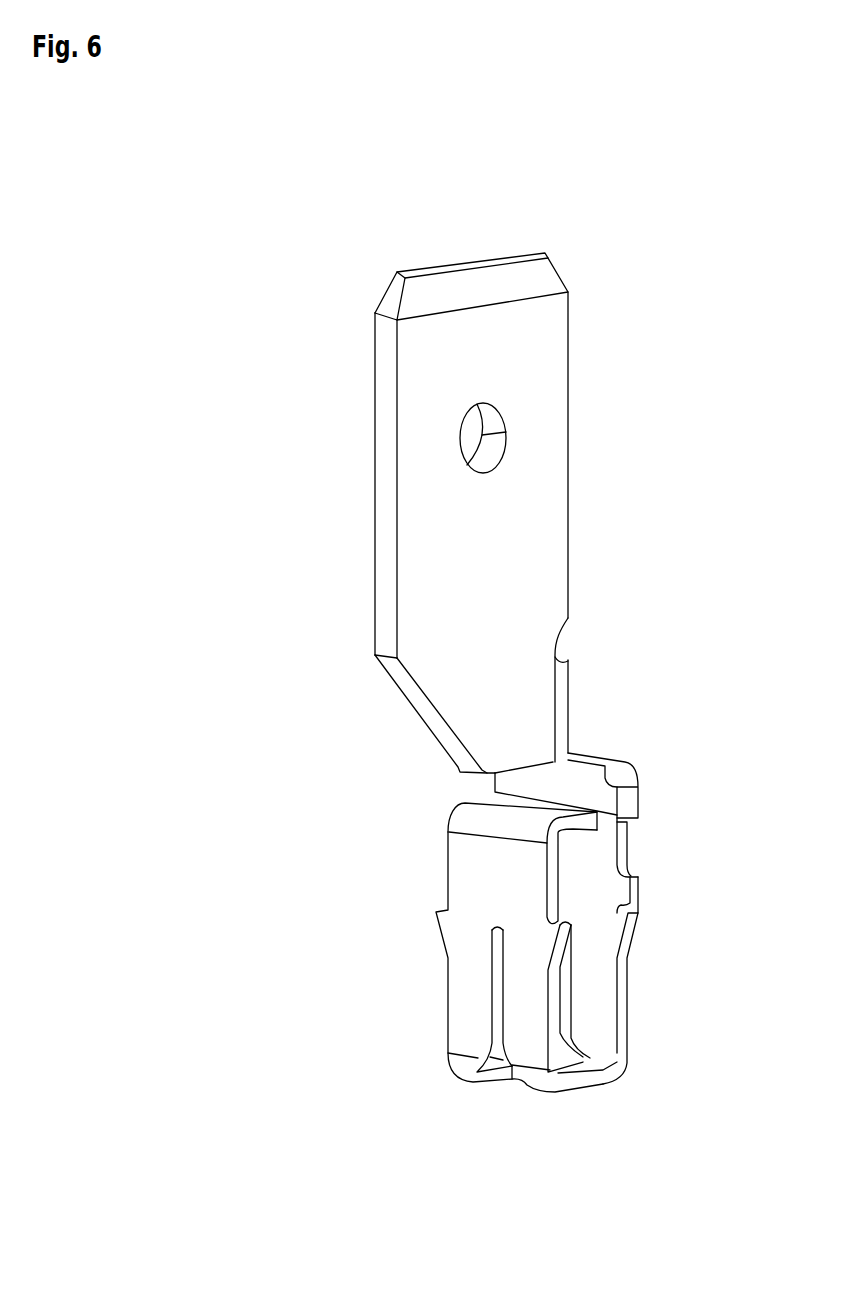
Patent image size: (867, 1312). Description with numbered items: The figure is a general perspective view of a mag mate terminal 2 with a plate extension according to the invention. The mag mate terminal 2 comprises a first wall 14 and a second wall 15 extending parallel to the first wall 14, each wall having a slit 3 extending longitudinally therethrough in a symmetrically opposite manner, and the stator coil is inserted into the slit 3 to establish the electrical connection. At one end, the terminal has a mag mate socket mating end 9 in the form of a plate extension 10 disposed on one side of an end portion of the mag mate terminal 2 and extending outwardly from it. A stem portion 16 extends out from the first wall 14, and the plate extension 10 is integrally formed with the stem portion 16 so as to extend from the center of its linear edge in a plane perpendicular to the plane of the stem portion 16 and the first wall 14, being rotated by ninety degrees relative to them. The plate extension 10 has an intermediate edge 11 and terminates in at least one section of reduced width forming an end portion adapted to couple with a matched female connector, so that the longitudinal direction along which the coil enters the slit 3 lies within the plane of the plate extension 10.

The mag mate terminal 2 is at (203, 371).
The slit 3 is at (495, 993).
The mag mate socket mating end 9 is at (597, 392).
The plate extension 10 is at (547, 443).
The intermediate edge 11 is at (415, 692).
The first wall 14 is at (595, 893).
The second wall 15 is at (490, 888).
The stem portion 16 is at (577, 793).